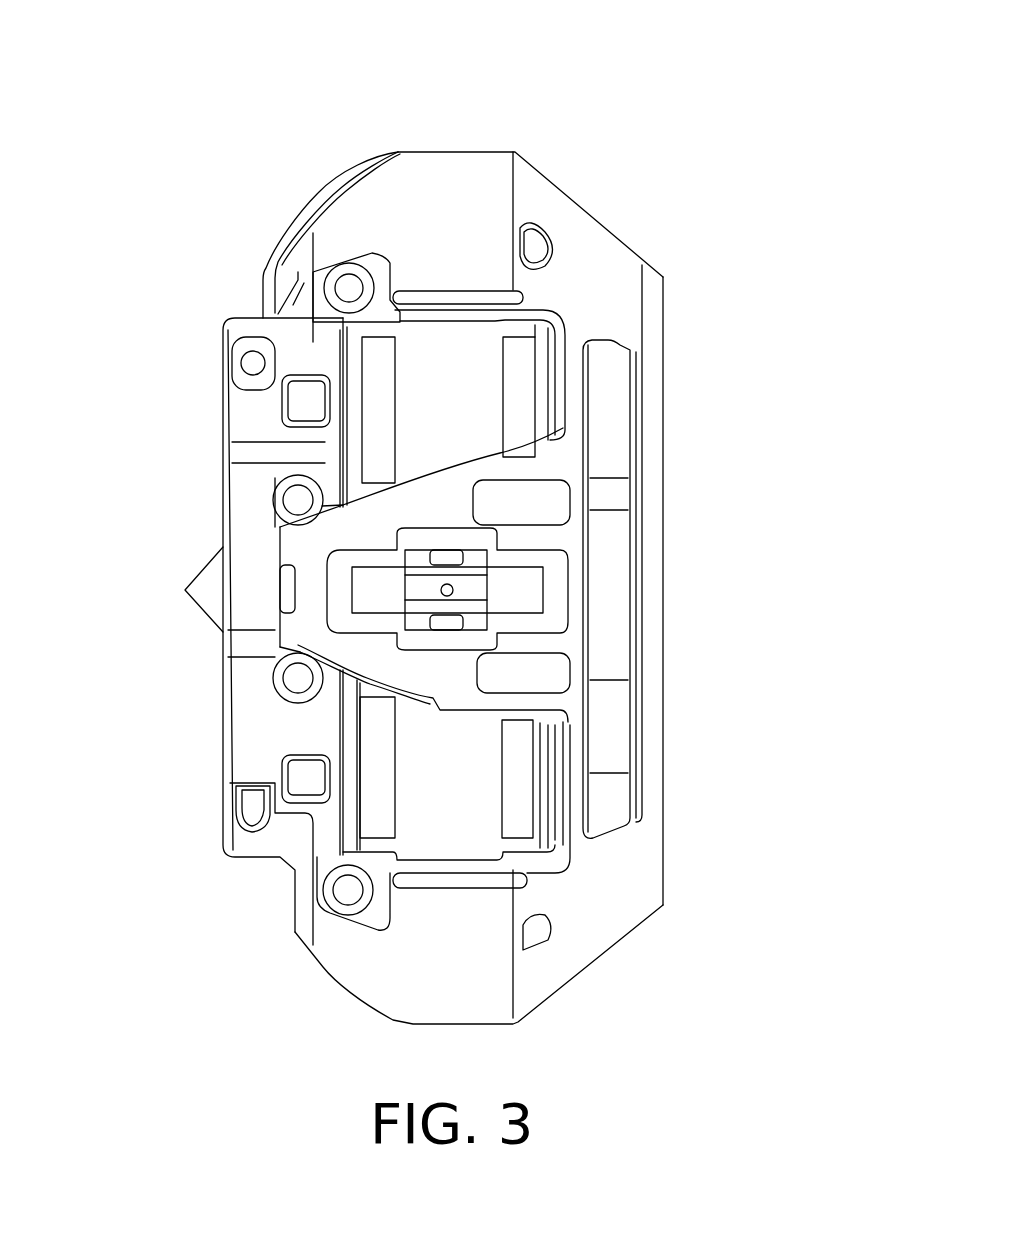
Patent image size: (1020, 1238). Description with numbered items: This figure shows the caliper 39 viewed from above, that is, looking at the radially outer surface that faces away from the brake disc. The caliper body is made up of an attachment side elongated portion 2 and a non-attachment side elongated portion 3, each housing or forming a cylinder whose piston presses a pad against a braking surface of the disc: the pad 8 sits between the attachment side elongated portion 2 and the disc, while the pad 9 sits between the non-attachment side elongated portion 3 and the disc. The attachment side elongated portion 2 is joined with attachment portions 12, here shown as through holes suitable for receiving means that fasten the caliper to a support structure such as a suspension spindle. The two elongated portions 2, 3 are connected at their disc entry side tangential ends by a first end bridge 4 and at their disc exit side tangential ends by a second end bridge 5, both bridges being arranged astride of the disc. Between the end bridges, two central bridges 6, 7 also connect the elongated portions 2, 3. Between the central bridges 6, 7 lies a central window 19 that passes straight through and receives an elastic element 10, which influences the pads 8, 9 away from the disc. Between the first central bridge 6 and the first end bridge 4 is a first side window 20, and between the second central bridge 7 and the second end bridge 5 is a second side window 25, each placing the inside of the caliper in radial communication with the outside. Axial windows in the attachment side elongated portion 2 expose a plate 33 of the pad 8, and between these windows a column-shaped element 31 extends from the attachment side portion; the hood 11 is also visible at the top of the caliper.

The attachment side elongated portion 2 is at (224, 670).
The non-attachment side elongated portion 3 is at (650, 593).
The first end bridge 4 is at (457, 992).
The second end bridge 5 is at (487, 182).
The first central bridge 6 is at (450, 673).
The second central bridge 7 is at (440, 503).
The pad 8 is at (377, 372).
The pad 9 is at (520, 347).
The elastic element 10 is at (532, 590).
The hood 11 is at (290, 240).
The attachment portion 12 is at (343, 272).
The central window 19 is at (450, 556).
The first side window 20 is at (448, 803).
The second side window 25 is at (462, 417).
The column-shaped element 31 is at (297, 398).
The plate 33 is at (542, 813).
The caliper 39 is at (595, 143).